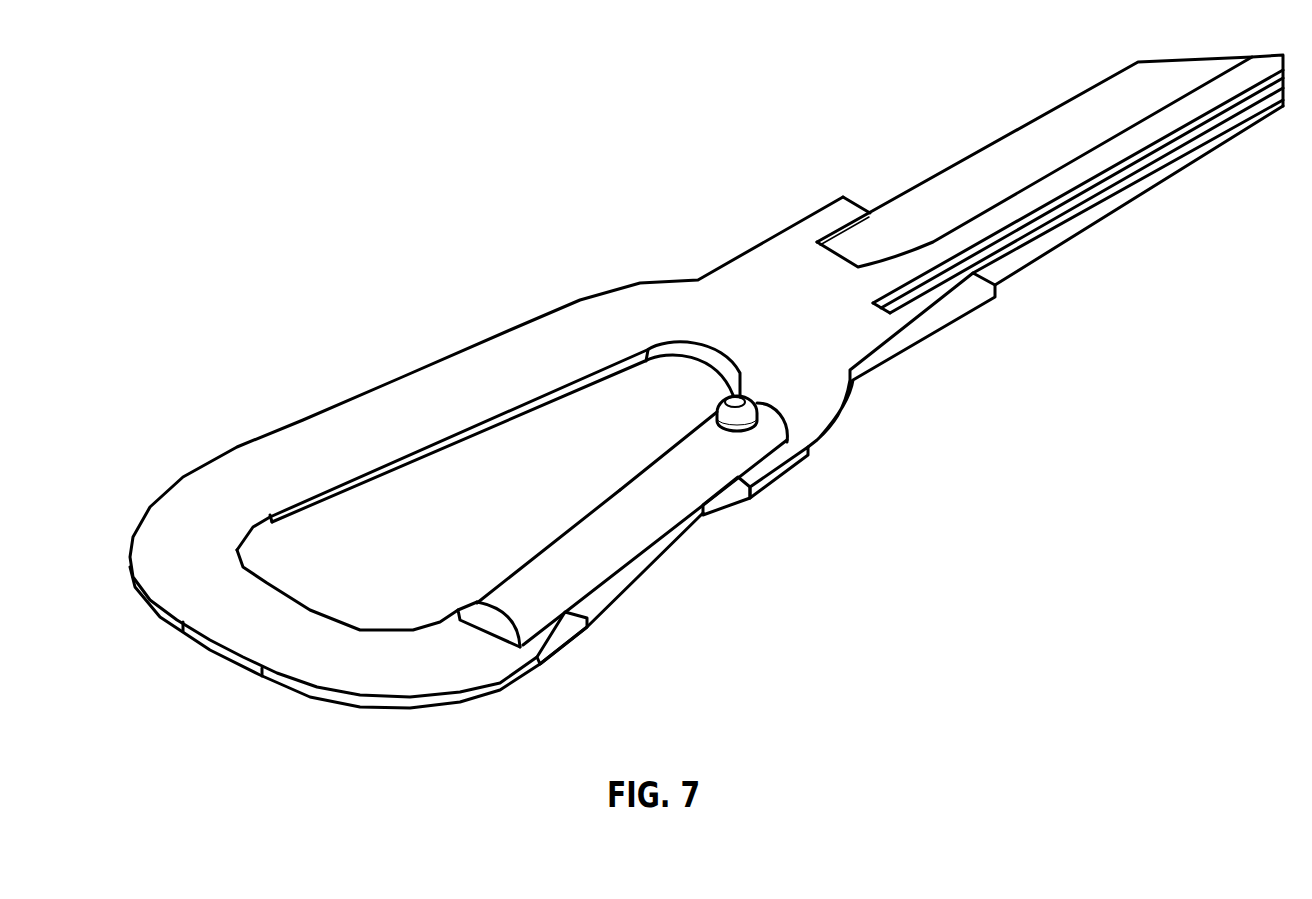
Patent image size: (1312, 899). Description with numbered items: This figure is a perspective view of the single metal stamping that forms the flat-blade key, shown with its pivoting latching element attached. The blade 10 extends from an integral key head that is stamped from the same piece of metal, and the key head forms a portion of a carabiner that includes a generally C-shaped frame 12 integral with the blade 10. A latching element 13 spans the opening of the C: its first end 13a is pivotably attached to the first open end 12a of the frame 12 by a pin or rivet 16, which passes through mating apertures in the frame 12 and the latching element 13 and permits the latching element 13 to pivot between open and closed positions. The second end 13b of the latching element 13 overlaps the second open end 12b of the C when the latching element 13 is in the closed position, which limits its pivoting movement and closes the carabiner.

The blade 10 is at (1145, 183).
The C-shaped frame 12 is at (548, 302).
The first open end 12a is at (783, 423).
The second open end 12b is at (563, 645).
The latching element 13 is at (653, 548).
The first end 13a is at (683, 452).
The second end 13b is at (493, 592).
The rivet 16 is at (733, 410).